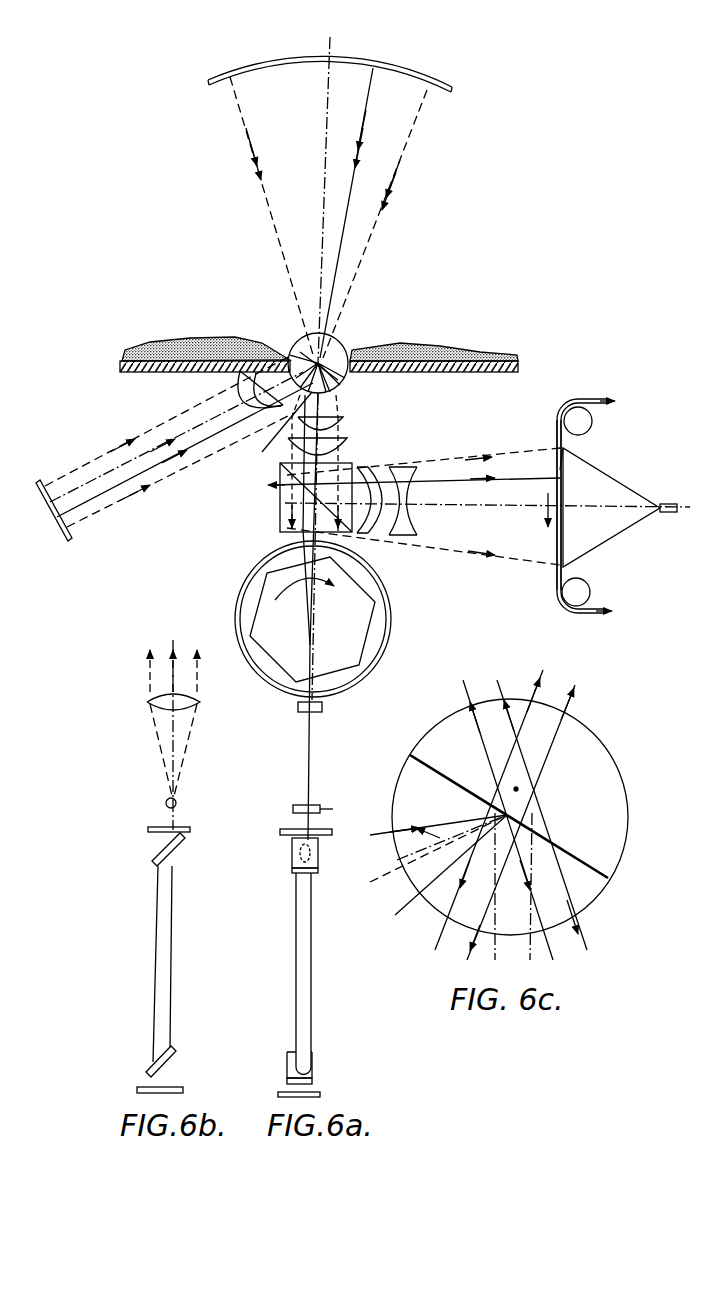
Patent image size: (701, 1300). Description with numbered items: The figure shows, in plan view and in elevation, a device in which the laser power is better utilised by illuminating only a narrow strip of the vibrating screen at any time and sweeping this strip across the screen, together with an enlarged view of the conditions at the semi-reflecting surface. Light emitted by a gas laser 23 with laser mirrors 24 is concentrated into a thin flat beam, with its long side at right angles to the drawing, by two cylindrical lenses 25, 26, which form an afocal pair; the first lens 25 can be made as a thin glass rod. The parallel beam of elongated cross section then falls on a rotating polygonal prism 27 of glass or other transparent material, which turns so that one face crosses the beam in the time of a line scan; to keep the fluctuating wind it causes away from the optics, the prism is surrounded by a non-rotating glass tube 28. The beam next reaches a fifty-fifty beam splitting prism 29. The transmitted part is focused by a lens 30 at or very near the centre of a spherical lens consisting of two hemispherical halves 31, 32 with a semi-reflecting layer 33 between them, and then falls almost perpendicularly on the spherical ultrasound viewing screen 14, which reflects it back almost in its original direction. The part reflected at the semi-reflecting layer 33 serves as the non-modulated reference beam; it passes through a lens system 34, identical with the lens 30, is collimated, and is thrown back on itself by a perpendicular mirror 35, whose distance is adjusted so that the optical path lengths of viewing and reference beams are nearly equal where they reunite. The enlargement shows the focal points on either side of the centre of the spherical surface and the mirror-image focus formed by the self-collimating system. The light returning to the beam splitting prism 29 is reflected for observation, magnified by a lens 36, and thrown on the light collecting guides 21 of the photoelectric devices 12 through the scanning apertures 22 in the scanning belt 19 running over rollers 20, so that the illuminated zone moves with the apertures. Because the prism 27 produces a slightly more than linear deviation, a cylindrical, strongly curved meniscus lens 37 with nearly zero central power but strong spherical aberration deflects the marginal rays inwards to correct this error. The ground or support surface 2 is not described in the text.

In FIG. 6a, the ground surface 2 is at (120, 363).
In FIG. 6a, the photoelectric device 12 is at (667, 503).
In FIG. 6a, the spherical ultrasound viewing screen 14 is at (443, 92).
In FIG. 6a, the belt 19 is at (556, 432).
In FIG. 6a, the roller 20 is at (592, 424).
In FIG. 6a, the light guide 21 is at (614, 533).
In FIG. 6a, the scanning aperture 22 is at (558, 470).
In FIG. 6a, the gas laser 23 is at (296, 958).
In FIG. 6b, the gas laser 23 is at (158, 958).
In FIG. 6a, the laser mirror 24 is at (280, 831).
In FIG. 6b, the laser mirror 24 is at (148, 829).
In FIG. 6a, the cylindrical lens 25 is at (293, 809).
In FIG. 6b, the cylindrical lens 25 is at (166, 803).
In FIG. 6a, the cylindrical lens 26 is at (298, 706).
In FIG. 6b, the cylindrical lens 26 is at (147, 702).
In FIG. 6a, the rotating polygonal prism 27 is at (360, 650).
In FIG. 6a, the non-rotating glass tube 28 is at (388, 620).
In FIG. 6a, the beam splitting prism 29 is at (280, 500).
In FIG. 6a, the lens 30 is at (348, 437).
In FIG. 6a, the hemispherical half 31 is at (330, 392).
In FIG. 6c, the hemispherical half 31 is at (590, 893).
In FIG. 6a, the hemispherical half 32 is at (336, 343).
In FIG. 6c, the hemispherical half 32 is at (612, 767).
In FIG. 6a, the semi-reflecting layer 33 is at (340, 380).
In FIG. 6c, the semi-reflecting layer 33 is at (575, 852).
In FIG. 6a, the lens system 34 is at (238, 373).
In FIG. 6a, the perpendicular mirror 35 is at (70, 541).
In FIG. 6a, the lens 36 is at (405, 537).
In FIG. 6a, the cylindrical meniscus lens 37 is at (364, 535).